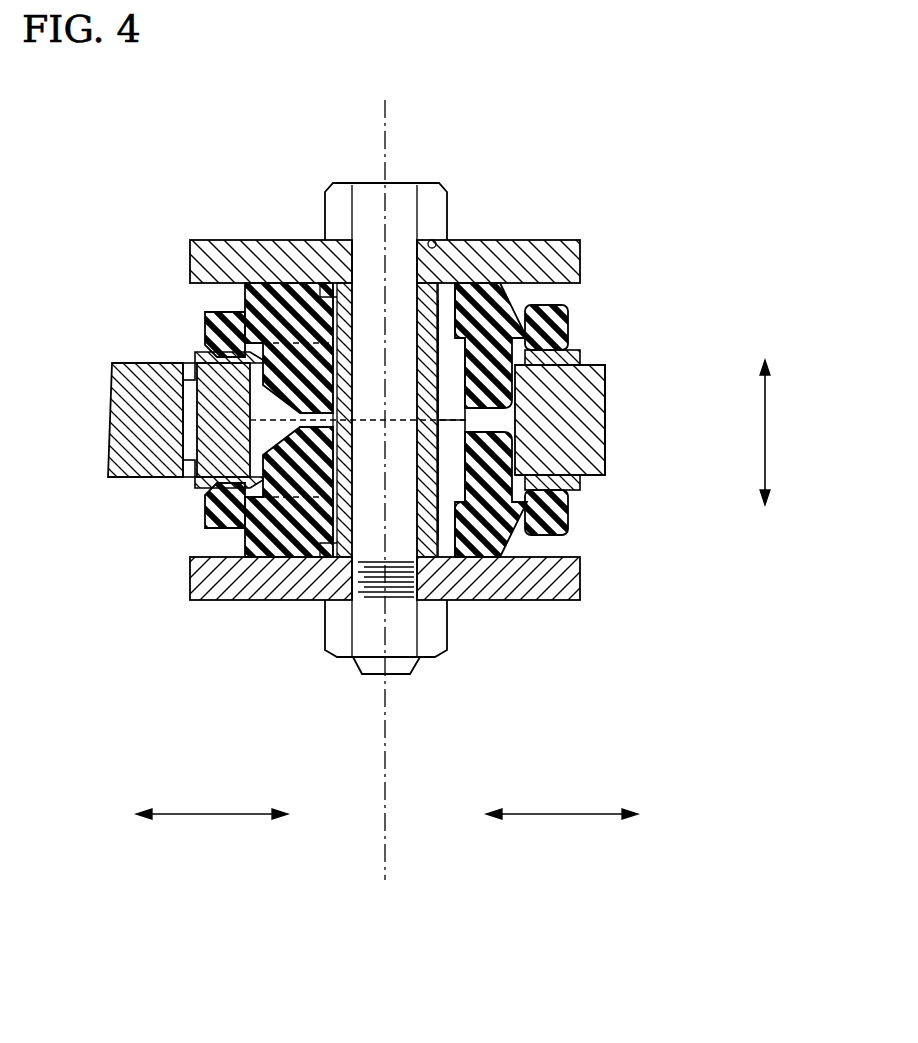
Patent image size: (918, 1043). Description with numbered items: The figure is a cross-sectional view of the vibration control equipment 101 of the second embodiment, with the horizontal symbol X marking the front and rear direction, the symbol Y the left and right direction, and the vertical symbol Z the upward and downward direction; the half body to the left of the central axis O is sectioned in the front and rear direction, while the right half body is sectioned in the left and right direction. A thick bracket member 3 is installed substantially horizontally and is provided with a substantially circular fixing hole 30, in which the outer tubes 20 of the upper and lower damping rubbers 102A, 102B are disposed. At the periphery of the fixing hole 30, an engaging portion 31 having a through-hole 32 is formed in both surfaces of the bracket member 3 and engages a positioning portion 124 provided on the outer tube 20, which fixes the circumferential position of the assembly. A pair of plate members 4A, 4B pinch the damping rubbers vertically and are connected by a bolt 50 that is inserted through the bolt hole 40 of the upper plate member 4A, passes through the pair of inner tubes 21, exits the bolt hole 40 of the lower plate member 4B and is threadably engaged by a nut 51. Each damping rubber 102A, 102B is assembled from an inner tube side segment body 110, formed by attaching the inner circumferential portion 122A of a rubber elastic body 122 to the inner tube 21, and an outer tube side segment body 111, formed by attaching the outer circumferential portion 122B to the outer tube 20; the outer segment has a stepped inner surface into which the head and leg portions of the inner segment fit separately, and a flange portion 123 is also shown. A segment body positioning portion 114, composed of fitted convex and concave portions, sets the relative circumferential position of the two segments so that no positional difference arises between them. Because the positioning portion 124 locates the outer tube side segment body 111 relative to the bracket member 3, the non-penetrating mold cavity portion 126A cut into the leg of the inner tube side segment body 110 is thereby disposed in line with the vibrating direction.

The vibration control equipment 101 is at (562, 136).
The bracket member 3 is at (585, 437).
The plate member 4A is at (582, 248).
The plate member 4B is at (582, 590).
The outer tube 20 is at (600, 378).
The inner tube 21 is at (316, 296).
The fixing hole 30 is at (605, 414).
The engaging portion 31 is at (187, 363).
The through-hole 32 is at (187, 455).
The bolt hole 40 is at (432, 237).
The bolt 50 is at (368, 192).
The nut 51 is at (437, 652).
The damping rubber 102A is at (697, 258).
The damping rubber 102B is at (697, 514).
The inner tube side segment body 110 is at (528, 297).
The outer tube side segment body 111 is at (569, 337).
The segment body positioning portion 114 is at (207, 318).
The rubber elastic body 122 is at (293, 121).
The inner circumferential portion 122A is at (278, 292).
The outer circumferential portion 122B is at (232, 302).
The flange portion 123 is at (197, 352).
The positioning portion 124 is at (187, 377).
The mold cavity portion 126A is at (453, 353).
The central axis O is at (387, 128).
The front and rear direction X is at (218, 816).
The left and right direction Y is at (563, 816).
The upward and downward direction Z is at (765, 440).